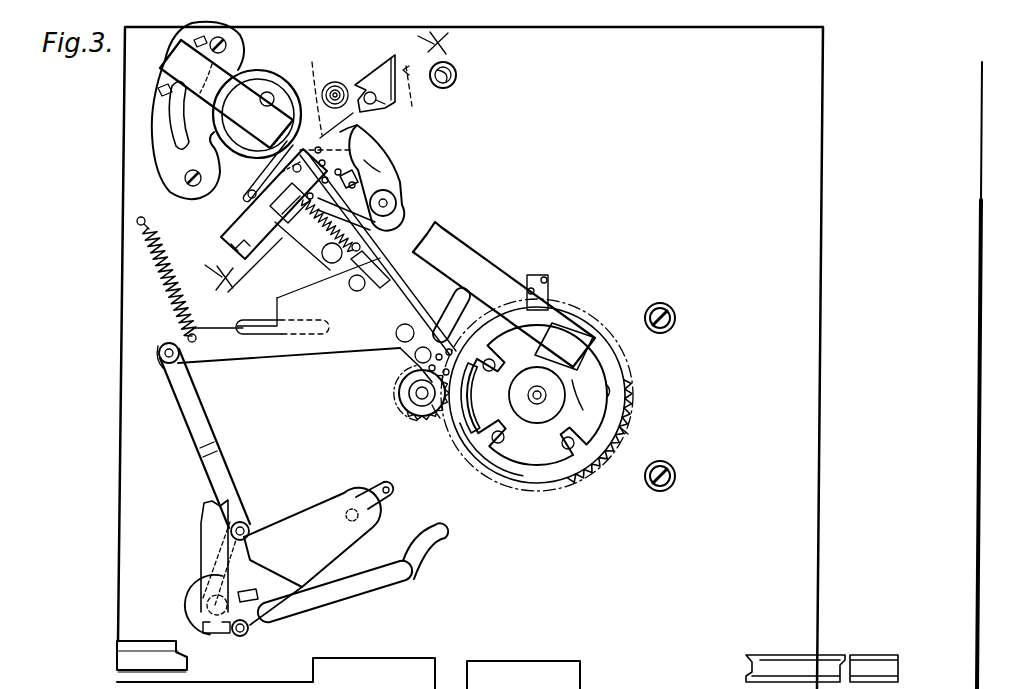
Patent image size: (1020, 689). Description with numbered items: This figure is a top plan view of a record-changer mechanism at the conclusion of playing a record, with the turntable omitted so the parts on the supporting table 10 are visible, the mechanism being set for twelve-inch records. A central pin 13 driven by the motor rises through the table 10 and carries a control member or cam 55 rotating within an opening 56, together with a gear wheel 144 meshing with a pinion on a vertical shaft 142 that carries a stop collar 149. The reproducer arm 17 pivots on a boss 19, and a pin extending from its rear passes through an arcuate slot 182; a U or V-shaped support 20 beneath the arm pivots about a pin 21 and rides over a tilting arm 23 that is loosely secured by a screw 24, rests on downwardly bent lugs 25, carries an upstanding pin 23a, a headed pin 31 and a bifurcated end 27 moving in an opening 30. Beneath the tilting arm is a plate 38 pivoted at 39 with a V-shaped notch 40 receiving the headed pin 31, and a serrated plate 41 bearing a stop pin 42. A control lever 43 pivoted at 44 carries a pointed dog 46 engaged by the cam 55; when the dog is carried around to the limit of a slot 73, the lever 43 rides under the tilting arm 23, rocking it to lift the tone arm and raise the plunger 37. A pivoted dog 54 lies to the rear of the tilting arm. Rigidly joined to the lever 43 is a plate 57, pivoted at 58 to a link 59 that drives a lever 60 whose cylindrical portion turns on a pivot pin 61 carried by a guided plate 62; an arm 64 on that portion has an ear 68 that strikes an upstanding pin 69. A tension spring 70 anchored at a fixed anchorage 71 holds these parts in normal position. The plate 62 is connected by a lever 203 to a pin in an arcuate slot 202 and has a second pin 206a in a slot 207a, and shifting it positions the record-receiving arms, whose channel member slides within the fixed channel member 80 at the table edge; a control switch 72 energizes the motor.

The supporting table 10 is at (820, 303).
The central pin 13 is at (540, 405).
The reproducer arm 17 is at (233, 88).
The boss 19 is at (316, 158).
The U or V-shaped support 20 is at (340, 215).
The pin 21 is at (292, 170).
The tilting arm 23 is at (362, 140).
The upstanding pin 23a is at (312, 240).
The screw 24 is at (410, 110).
The downwardly bent lugs 25 is at (380, 117).
The bifurcated end 27 is at (230, 238).
The opening 30 is at (251, 272).
The headed pin 31 is at (325, 155).
The plunger 37 is at (338, 82).
The plate 38 is at (390, 192).
The pivot 39 is at (400, 205).
The V-shaped notch 40 is at (311, 87).
The serrated plate 41 is at (375, 168).
The stop pin 42 is at (440, 222).
The control lever 43 is at (318, 247).
The pivot 44 is at (342, 268).
The dog 46 is at (472, 405).
The pivoted dog 54 is at (252, 185).
The control member or cam 55 is at (586, 412).
The opening 56 is at (610, 390).
The plate 57 is at (338, 350).
The pivotal connection 58 is at (160, 352).
The link 59 is at (185, 416).
The lever 60 is at (248, 525).
The pivot pin 61 is at (208, 604).
The plate 62 is at (282, 530).
The arm 64 is at (206, 540).
The laterally extending ear 68 is at (256, 594).
The upstanding pin 69 is at (246, 632).
The tension spring 70 is at (158, 265).
The fixed anchorage 71 is at (137, 220).
The control switch 72 is at (456, 72).
The slot 73 is at (462, 305).
The fixed channel member 80 is at (834, 656).
The vertical shaft 142 is at (420, 394).
The gear wheel 144 is at (622, 430).
The stop collar 149 is at (438, 420).
The arcuate slot 182 is at (165, 128).
The arcuate slot 202 is at (445, 537).
The lever 203 is at (336, 604).
The second pin 206a is at (350, 508).
The slot 207a is at (392, 490).